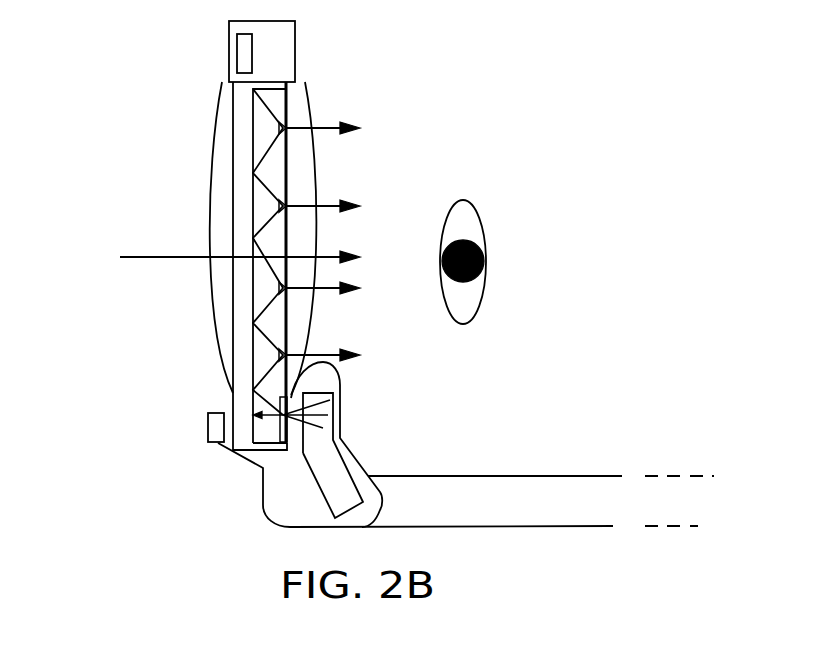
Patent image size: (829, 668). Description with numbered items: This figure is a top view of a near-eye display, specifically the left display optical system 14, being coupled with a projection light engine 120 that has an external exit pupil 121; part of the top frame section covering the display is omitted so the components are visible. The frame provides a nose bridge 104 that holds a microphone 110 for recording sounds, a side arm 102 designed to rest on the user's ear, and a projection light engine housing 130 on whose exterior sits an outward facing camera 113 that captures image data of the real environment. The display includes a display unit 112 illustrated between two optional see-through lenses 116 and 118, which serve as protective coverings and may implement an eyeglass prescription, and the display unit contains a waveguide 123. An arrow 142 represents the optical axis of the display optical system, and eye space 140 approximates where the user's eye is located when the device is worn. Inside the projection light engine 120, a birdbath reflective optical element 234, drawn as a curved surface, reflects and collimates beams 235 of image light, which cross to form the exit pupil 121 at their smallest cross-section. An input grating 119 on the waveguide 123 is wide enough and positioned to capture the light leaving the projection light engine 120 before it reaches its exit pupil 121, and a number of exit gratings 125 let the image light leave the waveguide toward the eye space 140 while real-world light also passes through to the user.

The display optical system 14 is at (118, 184).
The side arm 102 is at (502, 483).
The nose bridge 104 is at (283, 58).
The microphone 110 is at (238, 70).
The display unit 112 is at (243, 160).
The outward facing camera 113 is at (207, 427).
The see-through lens 116 is at (217, 197).
The see-through lens 118 is at (305, 242).
The input grating 119 is at (333, 390).
The projection light engine 120 is at (340, 443).
The exit pupil 121 is at (267, 428).
The waveguide 123 is at (278, 172).
The exit grating 125 is at (280, 124).
The projection light engine housing 130 is at (275, 516).
The eye space 140 is at (487, 262).
The optical axis 142 is at (155, 258).
The birdbath reflective optical element 234 is at (333, 397).
The beam 235 is at (320, 430).